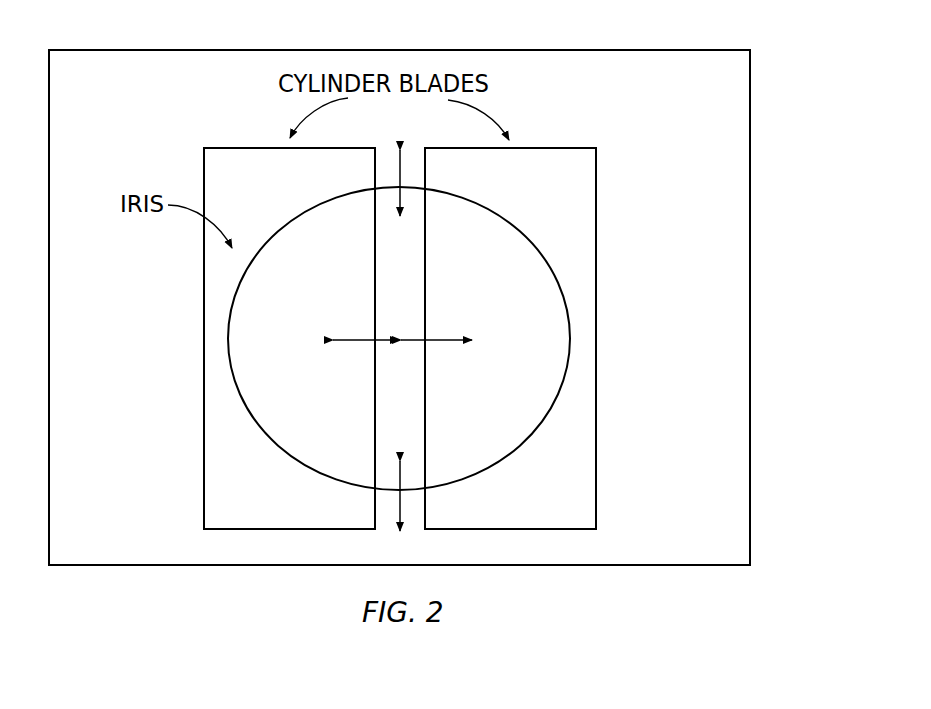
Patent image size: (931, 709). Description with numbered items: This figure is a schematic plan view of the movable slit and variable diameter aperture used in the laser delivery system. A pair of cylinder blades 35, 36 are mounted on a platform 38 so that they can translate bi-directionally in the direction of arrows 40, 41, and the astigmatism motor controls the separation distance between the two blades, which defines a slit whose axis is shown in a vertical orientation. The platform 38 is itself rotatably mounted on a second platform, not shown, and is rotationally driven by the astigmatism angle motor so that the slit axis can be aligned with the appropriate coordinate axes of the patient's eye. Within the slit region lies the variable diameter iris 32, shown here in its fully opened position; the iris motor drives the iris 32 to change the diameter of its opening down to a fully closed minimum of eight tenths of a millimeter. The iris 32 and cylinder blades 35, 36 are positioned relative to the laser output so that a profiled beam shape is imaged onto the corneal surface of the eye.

The platform 38 is at (742, 117).
The cylinder blade 35 is at (212, 490).
The cylinder blade 36 is at (510, 445).
The variable diameter iris 32 is at (402, 517).
The arrow 40 is at (358, 338).
The arrow 41 is at (442, 338).